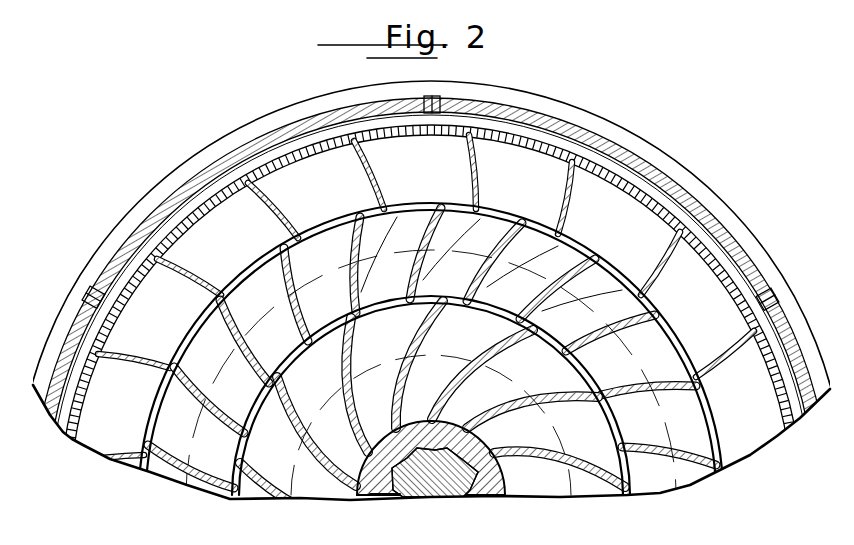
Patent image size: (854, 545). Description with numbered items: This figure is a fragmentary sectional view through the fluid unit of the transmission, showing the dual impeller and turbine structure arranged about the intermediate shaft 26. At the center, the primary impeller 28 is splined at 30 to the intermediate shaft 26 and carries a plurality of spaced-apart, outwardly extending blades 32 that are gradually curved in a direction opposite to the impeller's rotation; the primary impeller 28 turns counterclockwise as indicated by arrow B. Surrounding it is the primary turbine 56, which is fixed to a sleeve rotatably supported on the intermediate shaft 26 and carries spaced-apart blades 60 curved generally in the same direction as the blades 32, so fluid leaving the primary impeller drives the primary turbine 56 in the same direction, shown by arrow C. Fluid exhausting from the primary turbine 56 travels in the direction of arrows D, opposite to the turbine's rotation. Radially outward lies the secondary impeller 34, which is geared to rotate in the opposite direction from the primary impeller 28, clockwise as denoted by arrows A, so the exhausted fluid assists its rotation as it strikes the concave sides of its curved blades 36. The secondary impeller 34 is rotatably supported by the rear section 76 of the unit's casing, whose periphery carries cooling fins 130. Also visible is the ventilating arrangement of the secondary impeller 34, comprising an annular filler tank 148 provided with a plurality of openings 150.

The intermediate shaft 26 is at (424, 498).
The primary impeller 28 is at (493, 490).
The spline 30 is at (390, 495).
The blades 32 is at (293, 383).
The secondary impeller 34 is at (201, 212).
The blades 36 is at (189, 274).
The primary turbine 56 is at (185, 457).
The blades 60 is at (280, 299).
The rear section 76 is at (667, 185).
The cooling fins 130 is at (608, 131).
The annular filler tank 148 is at (505, 113).
The openings 150 is at (437, 95).